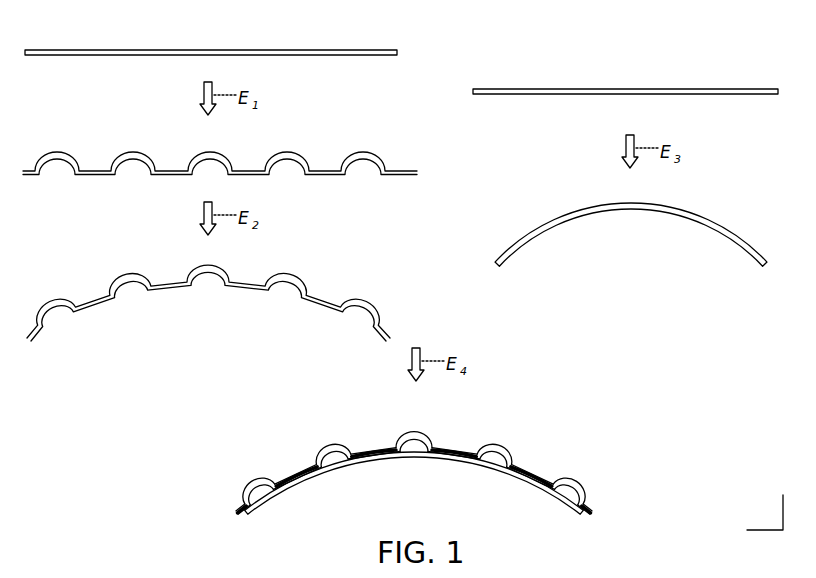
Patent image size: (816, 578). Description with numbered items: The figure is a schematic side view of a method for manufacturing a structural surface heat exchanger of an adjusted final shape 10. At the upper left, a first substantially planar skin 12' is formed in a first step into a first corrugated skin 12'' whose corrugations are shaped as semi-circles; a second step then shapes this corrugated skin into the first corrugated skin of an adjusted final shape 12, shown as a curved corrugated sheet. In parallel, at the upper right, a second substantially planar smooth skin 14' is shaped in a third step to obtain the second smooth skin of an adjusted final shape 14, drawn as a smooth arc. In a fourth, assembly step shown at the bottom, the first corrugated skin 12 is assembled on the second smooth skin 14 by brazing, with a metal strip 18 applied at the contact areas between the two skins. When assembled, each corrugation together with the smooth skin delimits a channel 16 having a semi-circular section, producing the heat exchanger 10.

The structural surface heat exchanger of an adjusted final shape 10 is at (597, 429).
The first substantially planar skin 12' is at (211, 38).
The first corrugated skin 12'' is at (220, 150).
The first corrugated skin of an adjusted final shape 12 is at (309, 383).
The second substantially planar smooth skin 14' is at (625, 76).
The second smooth skin of an adjusted final shape 14 is at (506, 347).
The channels 16 is at (318, 458).
The metal strip 18 is at (238, 505).